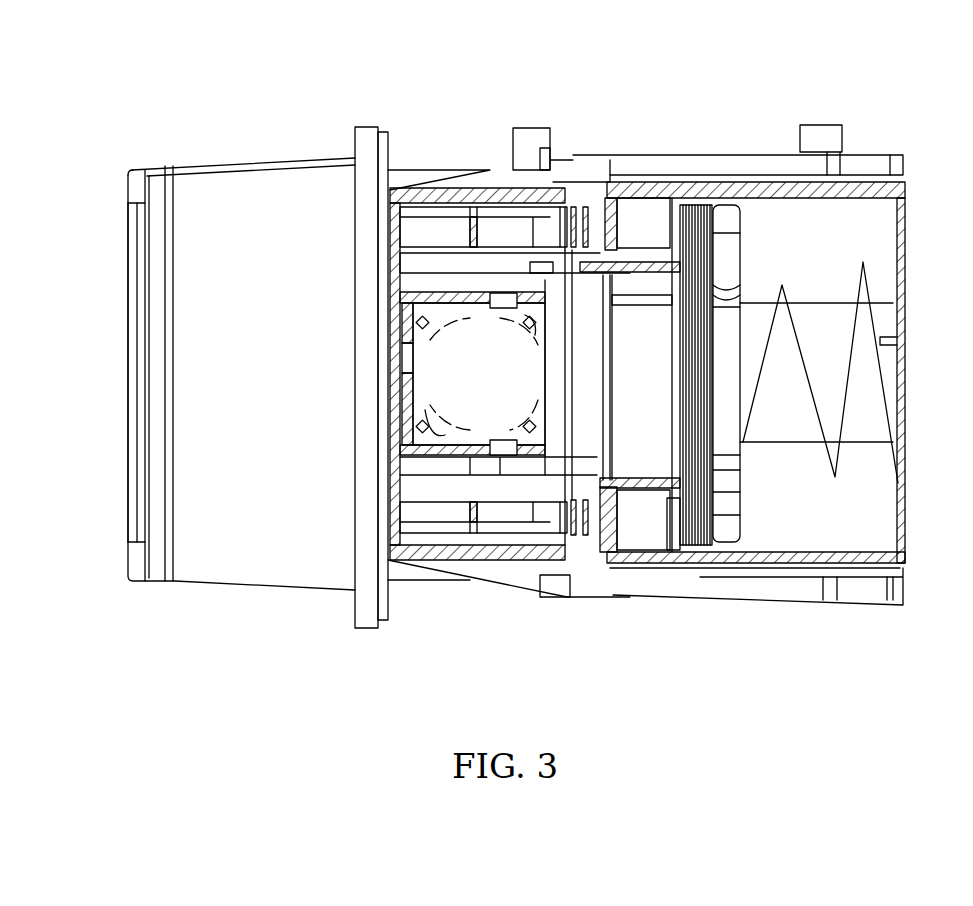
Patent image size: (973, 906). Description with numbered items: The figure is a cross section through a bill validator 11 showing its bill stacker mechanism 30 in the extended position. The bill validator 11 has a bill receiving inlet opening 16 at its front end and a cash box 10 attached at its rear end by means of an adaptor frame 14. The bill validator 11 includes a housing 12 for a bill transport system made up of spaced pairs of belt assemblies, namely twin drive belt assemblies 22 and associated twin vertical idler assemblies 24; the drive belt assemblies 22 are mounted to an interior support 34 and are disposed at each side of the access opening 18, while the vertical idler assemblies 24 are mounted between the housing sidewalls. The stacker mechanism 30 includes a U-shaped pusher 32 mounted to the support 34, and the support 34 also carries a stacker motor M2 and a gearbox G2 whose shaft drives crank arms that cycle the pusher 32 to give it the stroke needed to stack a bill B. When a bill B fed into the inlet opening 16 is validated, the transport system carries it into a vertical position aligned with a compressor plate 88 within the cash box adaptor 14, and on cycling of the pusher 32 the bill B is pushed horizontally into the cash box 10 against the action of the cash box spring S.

The cash box 10 is at (868, 170).
The bill validator 11 is at (254, 160).
The housing 12 is at (490, 172).
The adaptor frame 14 is at (642, 173).
The bill receiving inlet opening 16 is at (126, 260).
The access opening 18 is at (617, 490).
The drive belt assemblies 22 is at (463, 232).
The vertical idler assemblies 24 is at (573, 220).
The stacker mechanism 30 is at (385, 308).
The pusher 32 is at (652, 365).
The interior support 34 is at (420, 385).
The compressor plate 88 is at (740, 223).
The bill B is at (740, 523).
The cash box spring S is at (795, 322).
The gearbox G2 is at (413, 340).
The stacker motor M2 is at (415, 412).